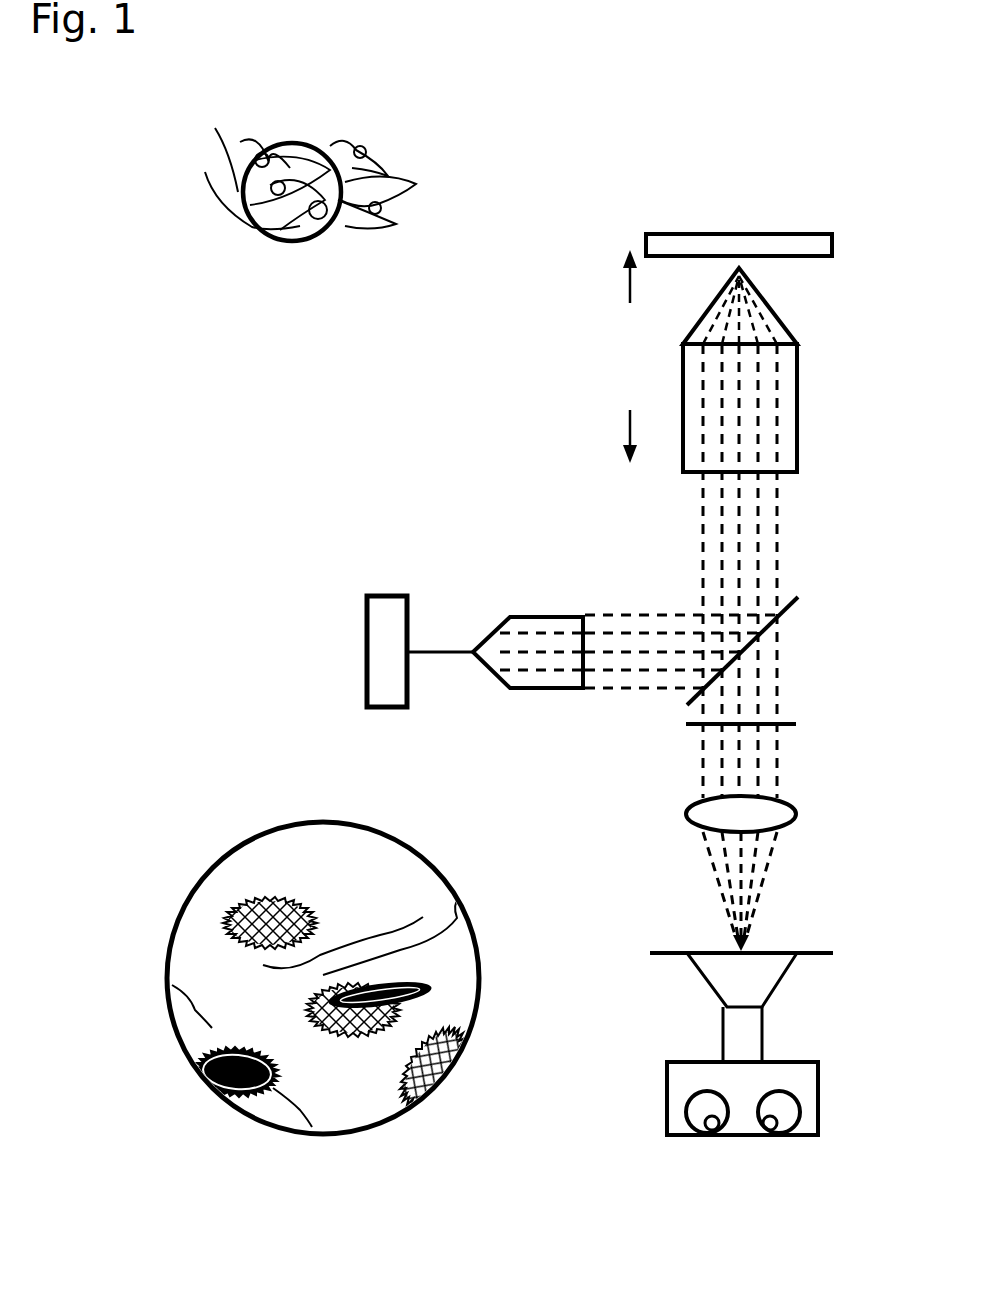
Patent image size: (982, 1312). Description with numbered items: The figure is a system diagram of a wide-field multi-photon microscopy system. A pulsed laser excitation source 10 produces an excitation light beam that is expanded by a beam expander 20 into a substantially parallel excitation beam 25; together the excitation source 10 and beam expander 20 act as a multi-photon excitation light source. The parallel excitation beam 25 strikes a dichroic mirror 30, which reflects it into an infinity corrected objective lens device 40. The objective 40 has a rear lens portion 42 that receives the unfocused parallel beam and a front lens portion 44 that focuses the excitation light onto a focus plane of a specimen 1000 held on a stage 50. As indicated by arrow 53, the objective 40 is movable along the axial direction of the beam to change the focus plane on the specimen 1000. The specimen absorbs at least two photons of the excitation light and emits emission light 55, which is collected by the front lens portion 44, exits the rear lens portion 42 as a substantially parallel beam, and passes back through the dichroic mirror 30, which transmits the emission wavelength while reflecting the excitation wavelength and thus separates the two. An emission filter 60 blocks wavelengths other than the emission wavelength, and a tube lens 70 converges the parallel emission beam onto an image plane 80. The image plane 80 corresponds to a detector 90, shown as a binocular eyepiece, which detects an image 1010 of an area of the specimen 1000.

The pulsed laser excitation source 10 is at (352, 678).
The beam expander 20 is at (498, 618).
The substantially parallel excitation beam 25 is at (642, 620).
The dichroic mirror 30 is at (804, 604).
The objective lens device 40 is at (812, 394).
The rear lens portion 42 is at (800, 442).
The front lens portion 44 is at (790, 310).
The stage 50 is at (766, 226).
The arrow 53 is at (622, 272).
The emission light 55 is at (794, 674).
The emission filter 60 is at (804, 726).
The tube lens 70 is at (808, 798).
The image plane 80 is at (836, 918).
The detector 90 is at (834, 1080).
The specimen 1000 is at (346, 145).
The image 1010 is at (272, 238).